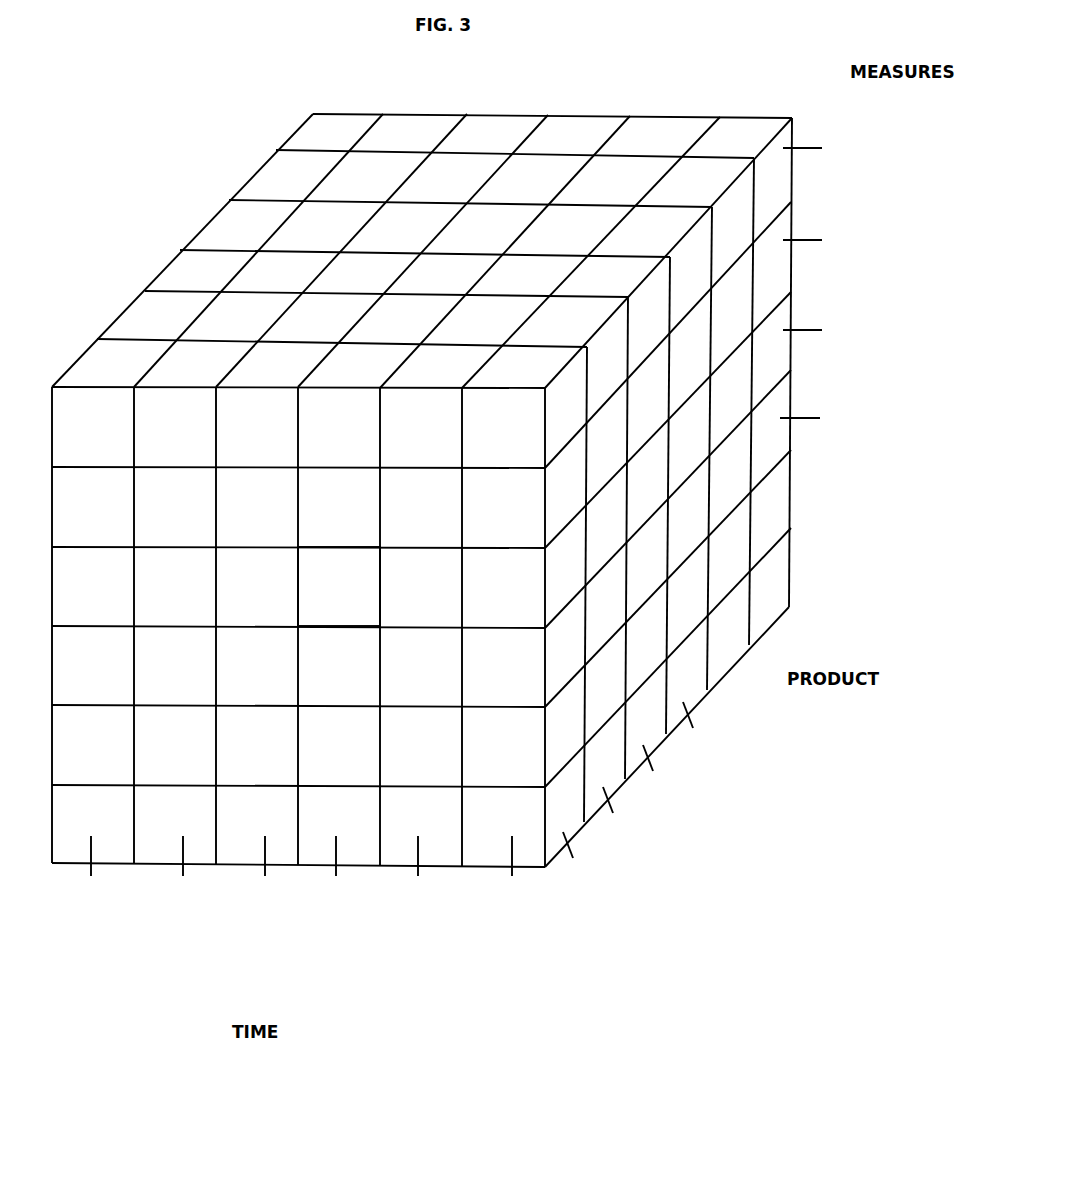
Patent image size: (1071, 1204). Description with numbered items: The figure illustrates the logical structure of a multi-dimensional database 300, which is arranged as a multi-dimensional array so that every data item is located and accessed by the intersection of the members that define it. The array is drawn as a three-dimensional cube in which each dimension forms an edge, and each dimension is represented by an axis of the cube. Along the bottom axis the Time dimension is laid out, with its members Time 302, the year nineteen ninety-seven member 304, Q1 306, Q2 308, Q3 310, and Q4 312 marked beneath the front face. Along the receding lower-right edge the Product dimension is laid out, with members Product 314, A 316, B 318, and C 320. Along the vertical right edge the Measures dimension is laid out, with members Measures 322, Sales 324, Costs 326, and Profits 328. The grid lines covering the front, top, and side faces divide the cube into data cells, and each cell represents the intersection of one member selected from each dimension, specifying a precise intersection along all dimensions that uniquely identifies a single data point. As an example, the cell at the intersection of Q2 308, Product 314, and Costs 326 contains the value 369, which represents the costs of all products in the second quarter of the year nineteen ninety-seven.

The multi-dimensional database 300 is at (507, 95).
The Time 302 is at (80, 905).
The 1997 304 is at (173, 913).
The Q1 306 is at (265, 913).
The Q2 308 is at (325, 918).
The Q3 310 is at (408, 918).
The Q4 312 is at (498, 920).
The Product 314 is at (655, 862).
The A 316 is at (675, 814).
The B 318 is at (705, 775).
The C 320 is at (737, 736).
The Measures 322 is at (855, 170).
The Sales 324 is at (845, 252).
The Costs 326 is at (848, 343).
The Profits 328 is at (850, 437).
The value 369 is at (339, 586).